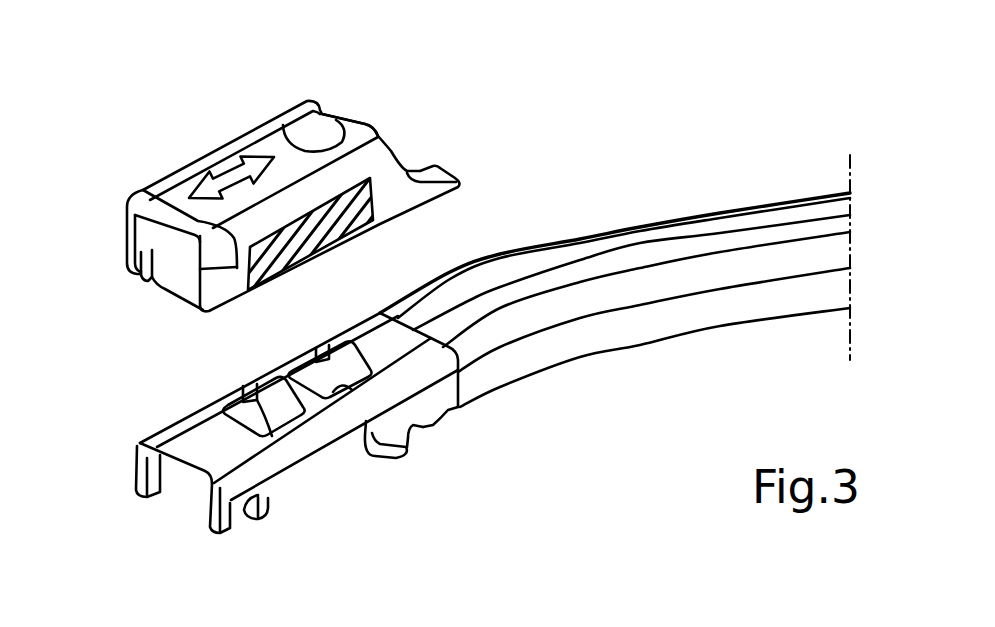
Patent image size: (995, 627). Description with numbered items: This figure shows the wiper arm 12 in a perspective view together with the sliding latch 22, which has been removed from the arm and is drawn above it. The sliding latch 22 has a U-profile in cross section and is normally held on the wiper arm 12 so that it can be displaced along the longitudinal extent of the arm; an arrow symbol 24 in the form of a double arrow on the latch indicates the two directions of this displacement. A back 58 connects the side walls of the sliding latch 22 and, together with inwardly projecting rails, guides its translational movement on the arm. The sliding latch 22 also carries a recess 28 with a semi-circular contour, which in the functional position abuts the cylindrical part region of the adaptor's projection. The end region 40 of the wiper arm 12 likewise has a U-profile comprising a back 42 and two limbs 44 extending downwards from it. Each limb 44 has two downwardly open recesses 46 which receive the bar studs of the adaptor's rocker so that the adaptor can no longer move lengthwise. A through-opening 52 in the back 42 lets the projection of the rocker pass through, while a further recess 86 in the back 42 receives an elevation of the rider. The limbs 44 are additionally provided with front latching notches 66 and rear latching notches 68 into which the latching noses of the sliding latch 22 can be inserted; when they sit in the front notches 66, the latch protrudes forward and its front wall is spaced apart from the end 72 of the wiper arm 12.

The wiper arm 12 is at (567, 228).
The sliding latch 22 is at (147, 150).
The arrow symbol 24 is at (227, 178).
The recess 28 is at (323, 114).
The end region 40 is at (128, 410).
The back 42 is at (207, 437).
The limbs 44 is at (308, 480).
The recesses 46 is at (407, 430).
The through-opening 52 is at (316, 355).
The back 58 is at (283, 148).
The front latching notches 66 is at (408, 430).
The rear latching notches 68 is at (448, 410).
The end 72 is at (180, 463).
The further recess 86 is at (244, 388).